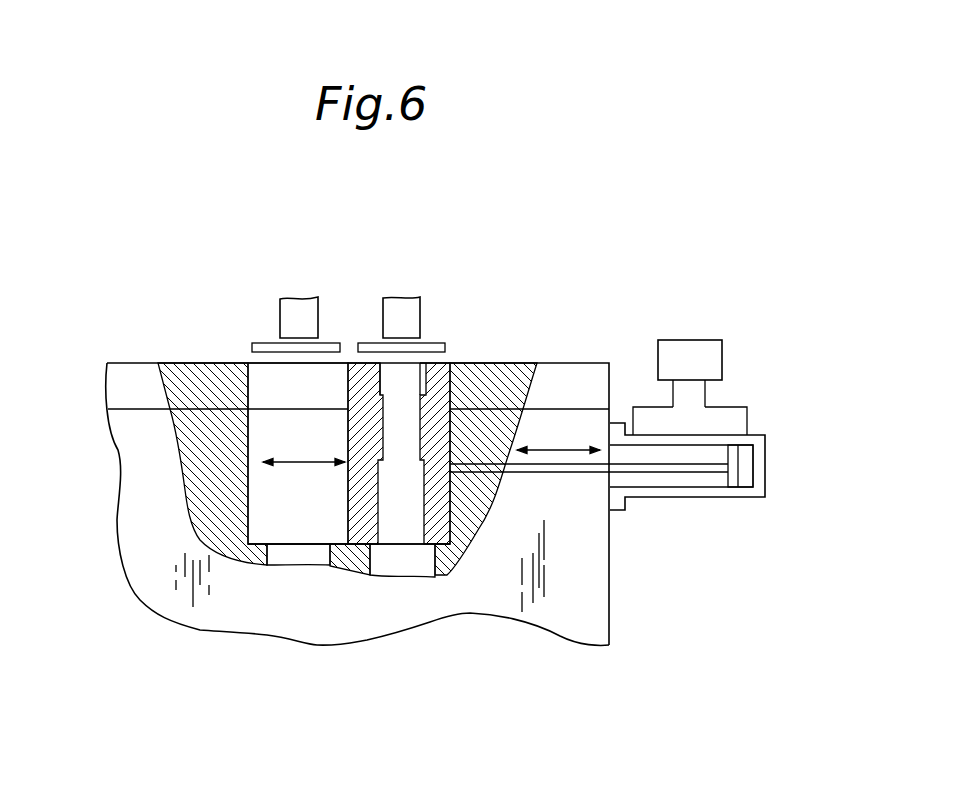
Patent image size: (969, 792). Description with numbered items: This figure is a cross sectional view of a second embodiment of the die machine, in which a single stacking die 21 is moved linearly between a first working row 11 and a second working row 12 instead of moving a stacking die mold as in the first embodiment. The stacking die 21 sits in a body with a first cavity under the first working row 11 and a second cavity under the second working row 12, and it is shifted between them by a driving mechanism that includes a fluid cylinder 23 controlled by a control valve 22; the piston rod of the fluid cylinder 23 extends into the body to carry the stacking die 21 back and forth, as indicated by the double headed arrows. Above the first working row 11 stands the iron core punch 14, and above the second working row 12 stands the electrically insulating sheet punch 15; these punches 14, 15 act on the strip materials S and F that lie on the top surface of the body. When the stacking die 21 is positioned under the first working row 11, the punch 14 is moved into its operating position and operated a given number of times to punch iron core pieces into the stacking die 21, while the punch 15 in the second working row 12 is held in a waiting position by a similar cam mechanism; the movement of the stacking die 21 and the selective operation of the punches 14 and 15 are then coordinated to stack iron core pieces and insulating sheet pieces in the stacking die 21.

The first working row 11 is at (433, 295).
The second working row 12 is at (272, 292).
The punch 14 is at (405, 302).
The punch 15 is at (301, 310).
The stacking die 21 is at (395, 525).
The control valve 22 is at (690, 345).
The fluid cylinder 23 is at (710, 497).
The substrate S is at (262, 343).
The film F is at (432, 342).